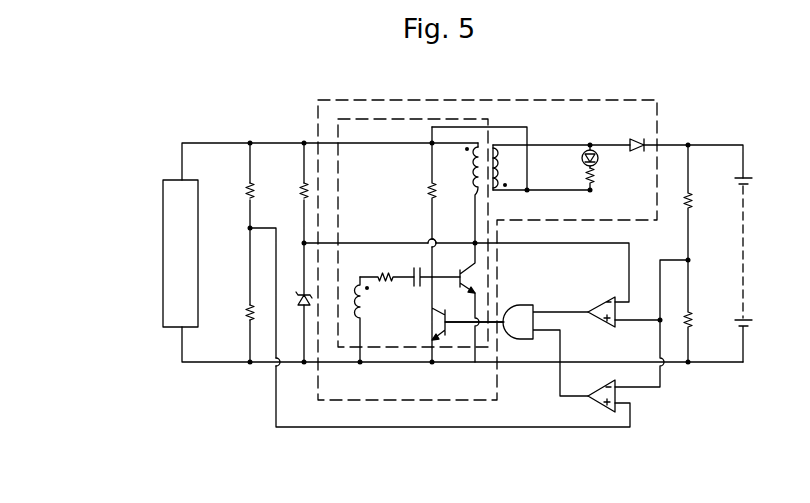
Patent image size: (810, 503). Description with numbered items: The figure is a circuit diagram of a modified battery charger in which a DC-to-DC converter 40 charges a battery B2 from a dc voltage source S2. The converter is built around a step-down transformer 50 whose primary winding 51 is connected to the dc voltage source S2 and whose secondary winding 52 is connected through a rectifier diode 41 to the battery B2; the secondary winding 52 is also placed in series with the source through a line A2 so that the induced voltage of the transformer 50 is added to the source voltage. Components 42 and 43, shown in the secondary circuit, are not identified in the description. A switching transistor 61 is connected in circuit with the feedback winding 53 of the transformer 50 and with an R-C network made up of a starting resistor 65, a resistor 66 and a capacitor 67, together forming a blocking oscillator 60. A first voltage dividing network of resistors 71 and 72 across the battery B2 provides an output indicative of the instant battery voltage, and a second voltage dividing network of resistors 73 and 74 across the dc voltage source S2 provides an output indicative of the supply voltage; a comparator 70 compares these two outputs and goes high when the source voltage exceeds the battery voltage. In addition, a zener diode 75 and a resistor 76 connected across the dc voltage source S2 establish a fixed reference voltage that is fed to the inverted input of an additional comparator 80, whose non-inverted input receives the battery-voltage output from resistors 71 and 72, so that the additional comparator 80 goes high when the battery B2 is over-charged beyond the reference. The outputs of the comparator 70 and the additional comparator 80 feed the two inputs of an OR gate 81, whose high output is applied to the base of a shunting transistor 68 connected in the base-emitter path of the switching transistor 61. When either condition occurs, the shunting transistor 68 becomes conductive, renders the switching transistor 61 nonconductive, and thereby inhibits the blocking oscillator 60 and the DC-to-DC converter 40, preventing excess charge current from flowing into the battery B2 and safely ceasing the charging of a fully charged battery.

The DC-to-DC converter 40 is at (658, 95).
The rectifier diode 41 is at (638, 138).
The indicator lamp 42 is at (592, 152).
The resistor 43 is at (593, 178).
The step-down transformer 50 is at (484, 143).
The primary winding 51 is at (470, 177).
The secondary winding 52 is at (503, 173).
The feedback winding 53 is at (363, 310).
The blocking oscillator 60 is at (345, 112).
The switching transistor 61 is at (472, 277).
The starting resistor 65 is at (428, 190).
The resistor 66 is at (382, 273).
The capacitor 67 is at (417, 268).
The shunting transistor 68 is at (437, 315).
The comparator 70 is at (602, 398).
The resistor 71 is at (690, 202).
The resistor 72 is at (690, 323).
The resistor 73 is at (245, 191).
The resistor 74 is at (245, 310).
The zener diode 75 is at (302, 306).
The resistor 76 is at (300, 187).
The additional comparator 80 is at (601, 303).
The OR gate 81 is at (522, 332).
The line A2 is at (510, 125).
The battery B2 is at (752, 182).
The dc voltage source S2 is at (163, 198).